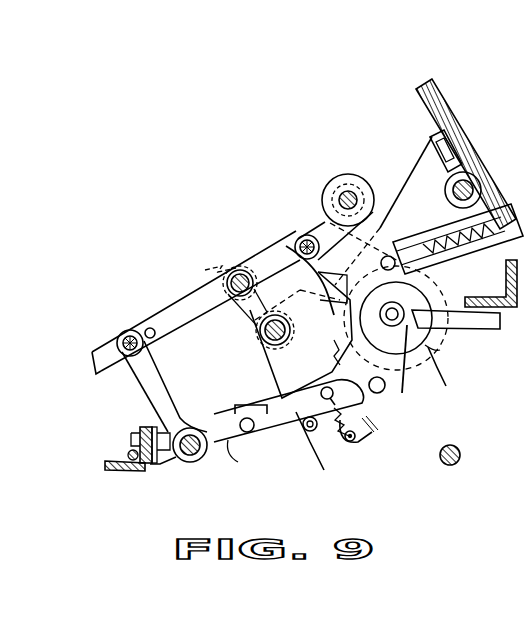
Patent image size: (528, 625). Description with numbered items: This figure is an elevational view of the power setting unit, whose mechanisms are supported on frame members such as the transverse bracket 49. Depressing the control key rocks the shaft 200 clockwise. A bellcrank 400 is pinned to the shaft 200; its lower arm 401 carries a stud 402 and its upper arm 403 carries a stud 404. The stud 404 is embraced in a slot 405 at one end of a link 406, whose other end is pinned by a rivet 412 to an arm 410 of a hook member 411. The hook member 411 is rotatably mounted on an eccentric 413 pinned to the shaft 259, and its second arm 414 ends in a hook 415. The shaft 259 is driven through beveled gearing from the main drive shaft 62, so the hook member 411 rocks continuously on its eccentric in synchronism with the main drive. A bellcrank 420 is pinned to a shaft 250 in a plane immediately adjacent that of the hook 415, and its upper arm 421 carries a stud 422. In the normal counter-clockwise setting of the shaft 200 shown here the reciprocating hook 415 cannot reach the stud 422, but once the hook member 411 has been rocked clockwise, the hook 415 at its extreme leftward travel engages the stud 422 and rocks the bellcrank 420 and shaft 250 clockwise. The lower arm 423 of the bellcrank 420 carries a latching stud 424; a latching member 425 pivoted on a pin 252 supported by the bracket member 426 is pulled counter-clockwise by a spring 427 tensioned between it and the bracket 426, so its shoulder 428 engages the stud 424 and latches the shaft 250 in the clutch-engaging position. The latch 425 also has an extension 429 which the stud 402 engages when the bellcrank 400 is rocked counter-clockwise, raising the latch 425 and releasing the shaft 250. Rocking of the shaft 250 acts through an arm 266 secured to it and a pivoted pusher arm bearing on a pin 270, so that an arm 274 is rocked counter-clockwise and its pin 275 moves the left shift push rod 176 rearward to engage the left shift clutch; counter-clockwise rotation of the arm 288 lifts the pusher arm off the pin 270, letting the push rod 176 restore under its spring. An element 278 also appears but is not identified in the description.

The transverse bracket 49 is at (447, 90).
The bracket member 426 is at (427, 152).
The main drive shaft 62 is at (481, 178).
The pivot boss 278 is at (350, 190).
The arm of hook member 410 is at (321, 240).
The rivet 412 is at (306, 235).
The arm 274 is at (384, 224).
The left shift push rod 176 is at (444, 224).
The link 406 is at (286, 246).
The hook 415 is at (312, 300).
The stud 422 is at (290, 256).
The upper arm of bellcrank 421 is at (290, 257).
The arm 266 is at (198, 292).
The pin 270 is at (456, 263).
The pin 275 is at (450, 280).
The slot 405 is at (147, 322).
The stud 404 is at (124, 338).
The shaft 250 is at (262, 332).
The bellcrank 420 is at (262, 337).
The shaft 259 is at (440, 326).
The second arm 414 is at (334, 355).
The eccentric 413 is at (441, 352).
The hook member 411 is at (450, 372).
The arm 288 is at (493, 388).
The upper arm of bellcrank 403 is at (158, 389).
The lower arm of bellcrank 423 is at (274, 369).
The extension 429 is at (262, 416).
The pin 252 is at (385, 393).
The spring 427 is at (370, 443).
The latching stud 424 is at (312, 432).
The shoulder 428 is at (305, 410).
The stud 402 is at (254, 435).
The latching member 425 is at (320, 458).
The lower arm of bellcrank 401 is at (237, 450).
The bellcrank 400 is at (173, 468).
The shaft 200 is at (191, 458).